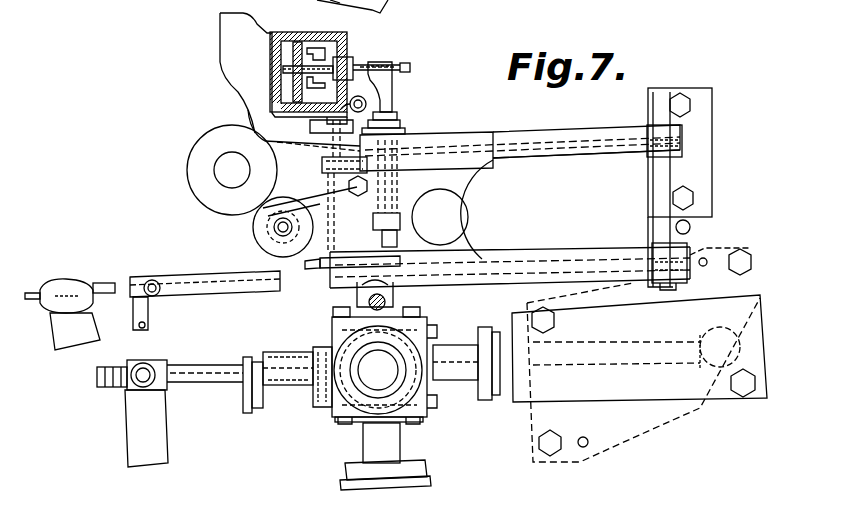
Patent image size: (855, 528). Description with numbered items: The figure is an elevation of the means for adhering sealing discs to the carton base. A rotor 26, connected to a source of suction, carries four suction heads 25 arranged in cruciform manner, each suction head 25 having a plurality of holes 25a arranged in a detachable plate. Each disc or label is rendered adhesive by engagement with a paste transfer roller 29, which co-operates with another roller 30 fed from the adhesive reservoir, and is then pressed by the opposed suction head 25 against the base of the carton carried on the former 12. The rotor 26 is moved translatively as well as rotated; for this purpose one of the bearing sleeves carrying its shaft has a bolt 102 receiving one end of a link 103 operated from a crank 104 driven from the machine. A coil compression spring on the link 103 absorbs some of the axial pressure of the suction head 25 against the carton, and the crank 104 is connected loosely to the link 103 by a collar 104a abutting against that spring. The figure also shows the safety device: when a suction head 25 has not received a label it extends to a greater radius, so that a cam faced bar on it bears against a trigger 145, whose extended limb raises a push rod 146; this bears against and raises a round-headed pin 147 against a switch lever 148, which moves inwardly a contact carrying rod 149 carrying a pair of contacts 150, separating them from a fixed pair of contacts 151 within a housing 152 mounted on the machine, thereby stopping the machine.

The former 12 is at (598, 390).
The suction head 25 is at (360, 473).
The holes 25a is at (378, 8).
The rotor 26 is at (417, 403).
The paste transfer roller 29 is at (257, 233).
The roller 30 is at (188, 169).
The bolt 102 is at (317, 377).
The link 103 is at (213, 373).
The crank 104 is at (157, 437).
The collar 104a is at (167, 365).
The trigger 145 is at (382, 238).
The push rod 146 is at (393, 127).
The round-headed pin 147 is at (393, 110).
The switch lever 148 is at (382, 85).
The contact carrying rod 149 is at (353, 67).
The pair of contacts 150 is at (297, 90).
The fixed pair of contacts 151 is at (327, 50).
The housing 152 is at (333, 31).